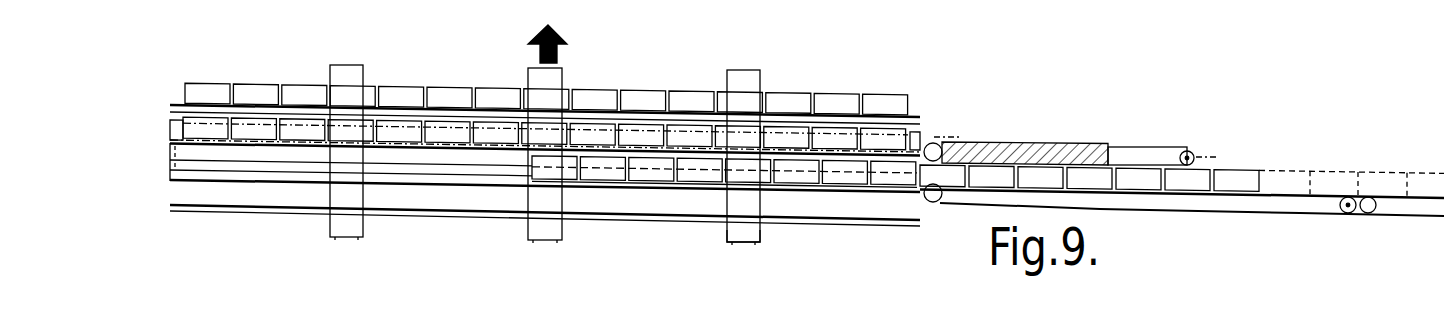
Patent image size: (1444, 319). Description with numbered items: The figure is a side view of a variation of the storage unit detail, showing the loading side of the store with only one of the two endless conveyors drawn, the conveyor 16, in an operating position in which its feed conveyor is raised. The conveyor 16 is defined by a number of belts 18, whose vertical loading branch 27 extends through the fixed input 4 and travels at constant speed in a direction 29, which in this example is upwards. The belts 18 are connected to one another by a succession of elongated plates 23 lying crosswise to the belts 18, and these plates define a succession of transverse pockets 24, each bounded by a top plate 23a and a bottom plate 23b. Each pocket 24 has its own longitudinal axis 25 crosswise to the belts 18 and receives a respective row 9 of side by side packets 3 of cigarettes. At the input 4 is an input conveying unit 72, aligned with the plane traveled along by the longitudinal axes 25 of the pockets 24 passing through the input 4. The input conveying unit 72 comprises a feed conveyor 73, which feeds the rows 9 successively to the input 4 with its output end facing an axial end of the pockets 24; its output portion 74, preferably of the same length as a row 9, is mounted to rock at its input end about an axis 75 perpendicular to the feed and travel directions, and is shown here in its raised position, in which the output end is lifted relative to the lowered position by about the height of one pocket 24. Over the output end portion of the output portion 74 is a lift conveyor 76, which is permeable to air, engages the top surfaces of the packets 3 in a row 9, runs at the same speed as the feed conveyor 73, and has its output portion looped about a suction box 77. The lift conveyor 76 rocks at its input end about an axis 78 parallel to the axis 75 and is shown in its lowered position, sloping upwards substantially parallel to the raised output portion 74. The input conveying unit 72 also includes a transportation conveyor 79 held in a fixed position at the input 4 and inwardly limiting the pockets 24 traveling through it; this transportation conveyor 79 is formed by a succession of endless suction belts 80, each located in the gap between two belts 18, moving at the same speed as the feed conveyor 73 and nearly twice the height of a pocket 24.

The packet 3 is at (1385, 172).
The fixed input 4 is at (930, 137).
The row 9 is at (630, 90).
The endless conveyor 16 is at (167, 200).
The belt 18 is at (346, 72).
The elongated plate 23 is at (832, 151).
The top plate 23a is at (870, 152).
The bottom plate 23b is at (863, 183).
The transverse pocket 24 is at (438, 133).
The longitudinal axis 25 is at (170, 124).
The vertical loading branch 27 is at (762, 235).
The direction 29 is at (565, 33).
The input conveying unit 72 is at (1203, 143).
The feed conveyor 73 is at (1386, 221).
The output portion 74 is at (1145, 200).
The axis 75 is at (1346, 170).
The lift conveyor 76 is at (1125, 158).
The suction box 77 is at (1035, 147).
The axis 78 is at (1212, 157).
The transportation conveyor 79 is at (169, 144).
The endless suction belt 80 is at (270, 153).